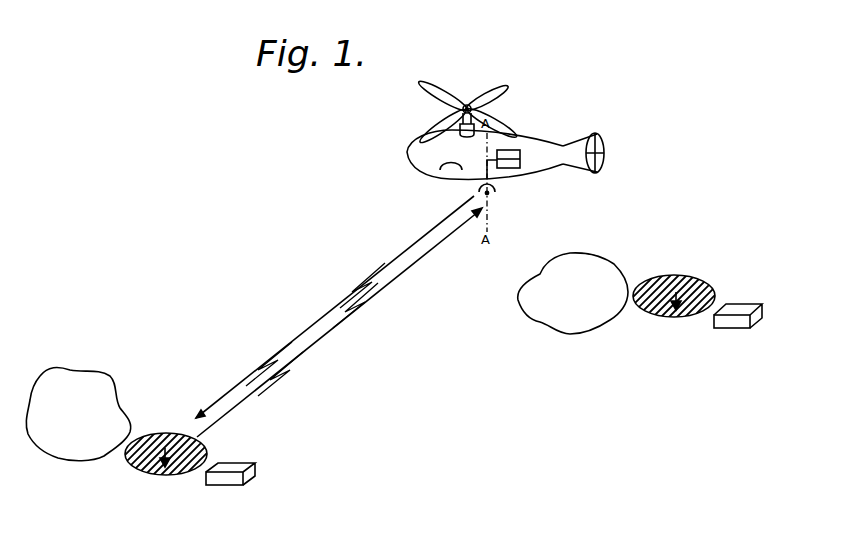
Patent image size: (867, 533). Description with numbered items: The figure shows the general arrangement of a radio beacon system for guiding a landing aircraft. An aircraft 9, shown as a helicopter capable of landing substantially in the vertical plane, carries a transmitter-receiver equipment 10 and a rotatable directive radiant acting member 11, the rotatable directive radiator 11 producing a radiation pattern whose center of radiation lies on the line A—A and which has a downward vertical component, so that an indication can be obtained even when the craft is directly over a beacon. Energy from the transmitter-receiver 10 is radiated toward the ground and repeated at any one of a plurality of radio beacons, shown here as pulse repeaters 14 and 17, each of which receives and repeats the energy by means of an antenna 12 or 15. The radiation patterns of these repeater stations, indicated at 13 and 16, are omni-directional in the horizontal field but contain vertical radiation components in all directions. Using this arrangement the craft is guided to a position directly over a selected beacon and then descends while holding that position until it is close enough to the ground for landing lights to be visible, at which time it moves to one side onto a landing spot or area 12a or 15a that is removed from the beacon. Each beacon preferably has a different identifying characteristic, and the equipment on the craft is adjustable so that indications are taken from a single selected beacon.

The aircraft 9 is at (532, 143).
The transmitter-receiver equipment 10 is at (510, 168).
The rotatable directive radiant acting member 11 is at (491, 196).
The antenna 12 is at (158, 473).
The landing spot or area 12a is at (163, 352).
The radiation pattern 13 is at (154, 435).
The pulse repeater 14 is at (245, 479).
The antenna 15 is at (648, 312).
The landing spot or area 15a is at (546, 317).
The radiation pattern 16 is at (688, 287).
The pulse repeater 17 is at (737, 323).